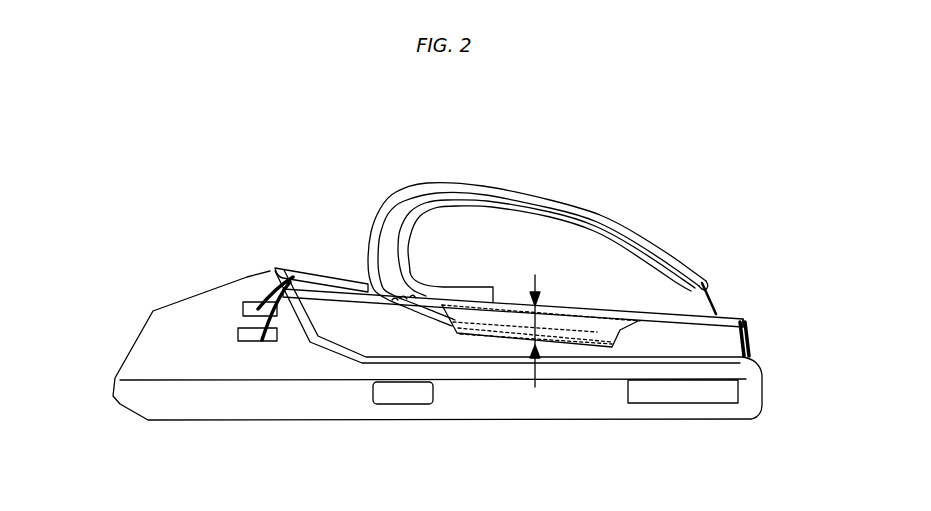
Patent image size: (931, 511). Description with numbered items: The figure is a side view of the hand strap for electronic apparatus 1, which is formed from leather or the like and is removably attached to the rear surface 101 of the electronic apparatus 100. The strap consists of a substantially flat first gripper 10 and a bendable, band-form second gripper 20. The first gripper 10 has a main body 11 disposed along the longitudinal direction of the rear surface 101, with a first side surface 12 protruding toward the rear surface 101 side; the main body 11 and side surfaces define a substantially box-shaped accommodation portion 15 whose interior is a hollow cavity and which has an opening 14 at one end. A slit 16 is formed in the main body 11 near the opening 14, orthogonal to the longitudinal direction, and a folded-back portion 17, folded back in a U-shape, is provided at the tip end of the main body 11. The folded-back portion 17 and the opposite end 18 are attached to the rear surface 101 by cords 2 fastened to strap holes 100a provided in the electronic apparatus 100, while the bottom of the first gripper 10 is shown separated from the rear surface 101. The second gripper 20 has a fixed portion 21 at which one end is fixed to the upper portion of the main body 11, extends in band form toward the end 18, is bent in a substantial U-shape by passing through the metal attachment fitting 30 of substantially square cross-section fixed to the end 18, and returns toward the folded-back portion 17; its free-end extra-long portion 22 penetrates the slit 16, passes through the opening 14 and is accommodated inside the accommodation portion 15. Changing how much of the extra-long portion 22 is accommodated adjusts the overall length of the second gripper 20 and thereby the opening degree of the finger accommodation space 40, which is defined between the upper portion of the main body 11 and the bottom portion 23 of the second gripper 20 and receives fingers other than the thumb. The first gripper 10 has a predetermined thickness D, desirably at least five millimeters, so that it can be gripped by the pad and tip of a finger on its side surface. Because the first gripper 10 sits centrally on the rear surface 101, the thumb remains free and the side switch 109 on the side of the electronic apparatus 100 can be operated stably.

The hand strap for electronic apparatus 1 is at (431, 175).
The cords 2 is at (263, 296).
The first gripper 10 is at (637, 320).
The main body 11 is at (506, 308).
The first side surface 12 is at (622, 327).
The opening 14 is at (443, 328).
The accommodation portion 15 is at (562, 316).
The slit 16 is at (393, 297).
The folded-back portion 17 is at (300, 266).
The end 18 is at (736, 312).
The second gripper 20 is at (558, 197).
The fixed portion 21 is at (465, 283).
The extra-long portion 22 is at (563, 330).
The bottom portion 23 is at (490, 208).
The metal attachment fitting 30 is at (713, 283).
The finger accommodation space 40 is at (575, 244).
The electronic apparatus 100 is at (304, 368).
The strap holes 100a is at (246, 336).
The rear surface 101 is at (474, 358).
The side switch 109 is at (394, 398).
The thickness D is at (535, 319).